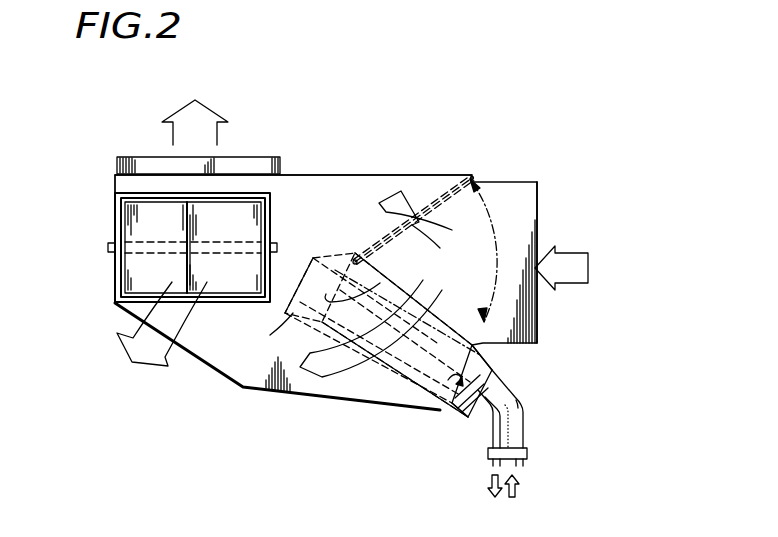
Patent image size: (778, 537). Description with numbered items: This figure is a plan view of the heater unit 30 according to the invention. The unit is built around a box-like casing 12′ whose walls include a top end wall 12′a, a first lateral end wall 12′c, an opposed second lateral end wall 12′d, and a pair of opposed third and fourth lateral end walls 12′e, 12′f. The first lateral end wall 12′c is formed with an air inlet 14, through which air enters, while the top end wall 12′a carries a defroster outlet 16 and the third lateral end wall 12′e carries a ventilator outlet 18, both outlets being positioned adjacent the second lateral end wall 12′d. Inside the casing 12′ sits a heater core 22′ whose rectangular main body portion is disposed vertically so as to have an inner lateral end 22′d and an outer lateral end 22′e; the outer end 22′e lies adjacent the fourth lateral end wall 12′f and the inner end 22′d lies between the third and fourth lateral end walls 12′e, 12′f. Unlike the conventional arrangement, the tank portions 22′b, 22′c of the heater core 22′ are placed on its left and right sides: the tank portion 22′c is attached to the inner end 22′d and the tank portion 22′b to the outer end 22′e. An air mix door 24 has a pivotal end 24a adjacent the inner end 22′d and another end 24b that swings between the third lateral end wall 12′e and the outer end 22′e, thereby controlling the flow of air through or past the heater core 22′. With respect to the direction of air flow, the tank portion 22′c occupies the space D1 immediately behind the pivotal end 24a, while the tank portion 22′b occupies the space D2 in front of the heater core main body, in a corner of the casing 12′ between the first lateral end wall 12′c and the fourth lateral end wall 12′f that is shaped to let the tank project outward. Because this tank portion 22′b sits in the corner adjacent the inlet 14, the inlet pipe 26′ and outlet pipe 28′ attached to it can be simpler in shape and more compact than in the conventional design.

The heater unit 30 is at (540, 111).
The ventilator outlet 18 is at (275, 157).
The casing 12′ is at (188, 368).
The top end wall 12′a is at (227, 360).
The first lateral end wall 12′c is at (537, 318).
The second lateral end wall 12′d is at (115, 208).
The third lateral end wall 12′e is at (340, 175).
The fourth lateral end wall 12′f is at (293, 393).
The air inlet 14 is at (537, 212).
The defroster outlet 16 is at (125, 272).
The air mix door 24 is at (432, 200).
The pivotal end 24a is at (352, 262).
The other end 24b is at (474, 176).
The heater core 22′ is at (366, 383).
The tank portion 22′b is at (462, 412).
The tank portion 22′c is at (280, 327).
The inner lateral end 22′d is at (388, 283).
The outer lateral end 22′e is at (395, 369).
The inlet pipe 26′ is at (512, 425).
The outlet pipe 28′ is at (490, 434).
The space D1 is at (310, 276).
The space D2 is at (492, 372).